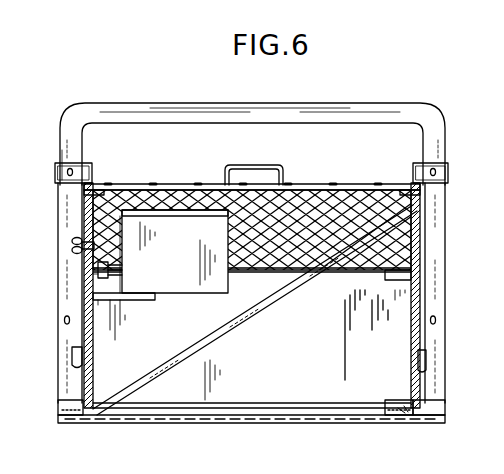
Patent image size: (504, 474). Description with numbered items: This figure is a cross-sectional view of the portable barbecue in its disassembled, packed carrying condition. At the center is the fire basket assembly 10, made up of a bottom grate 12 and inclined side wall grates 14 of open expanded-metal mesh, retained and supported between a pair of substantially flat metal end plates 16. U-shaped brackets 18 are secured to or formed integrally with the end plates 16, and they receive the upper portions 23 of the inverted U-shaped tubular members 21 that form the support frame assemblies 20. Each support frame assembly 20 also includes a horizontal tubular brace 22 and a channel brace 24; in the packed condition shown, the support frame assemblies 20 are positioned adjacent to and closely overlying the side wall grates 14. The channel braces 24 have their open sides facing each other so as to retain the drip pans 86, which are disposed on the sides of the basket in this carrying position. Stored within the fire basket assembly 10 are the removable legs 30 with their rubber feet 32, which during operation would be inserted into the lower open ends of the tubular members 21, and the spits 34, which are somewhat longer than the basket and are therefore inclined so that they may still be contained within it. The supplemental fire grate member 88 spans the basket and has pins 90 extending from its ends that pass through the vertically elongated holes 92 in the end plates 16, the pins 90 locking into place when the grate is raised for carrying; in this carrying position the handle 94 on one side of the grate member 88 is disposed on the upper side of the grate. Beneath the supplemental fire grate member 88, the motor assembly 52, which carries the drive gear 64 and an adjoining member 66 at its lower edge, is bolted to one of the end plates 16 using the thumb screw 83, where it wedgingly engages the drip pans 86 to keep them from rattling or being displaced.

The fire basket assembly 10 is at (326, 180).
The bottom grate 12 is at (268, 425).
The side wall grate 14 is at (390, 228).
The end plate 16 is at (83, 307).
The U-shaped bracket 18 is at (55, 173).
The support frame assembly 20 is at (427, 107).
The tubular member 21 is at (72, 137).
The horizontal tubular brace 22 is at (74, 357).
The upper portion of tubular member 23 is at (322, 108).
The channel brace 24 is at (75, 402).
The removable leg 30 is at (370, 426).
The rubber foot 32 is at (402, 425).
The spit 34 is at (228, 338).
The motor assembly 52 is at (177, 293).
The drive gear 64 is at (105, 270).
The support bracket 66 is at (108, 298).
The thumb screw 83 is at (76, 243).
The drip pan 86 is at (385, 352).
The supplemental fire grate member 88 is at (160, 185).
The pin 90 is at (84, 191).
The hole 92 is at (88, 188).
The handle 94 is at (258, 164).